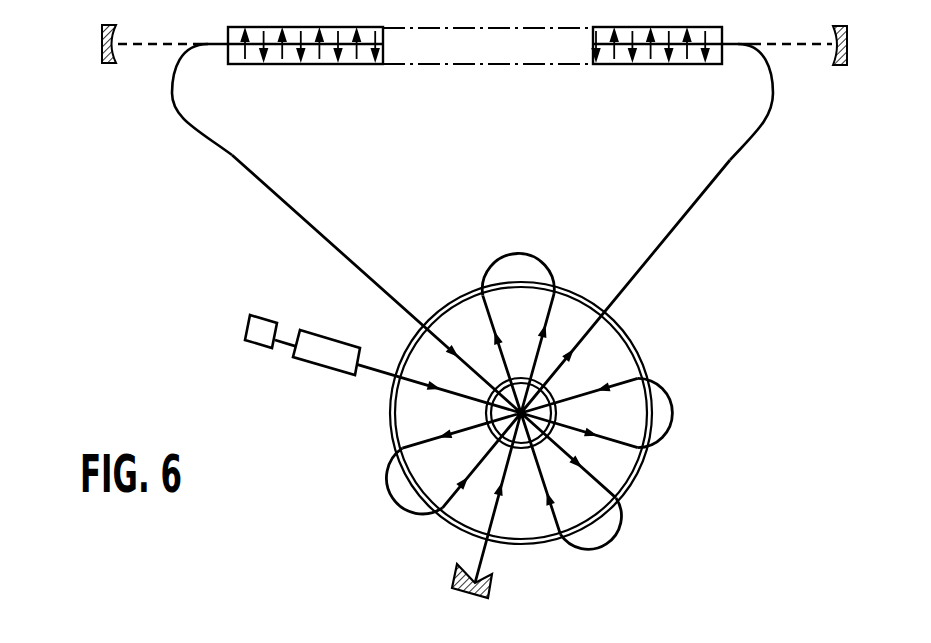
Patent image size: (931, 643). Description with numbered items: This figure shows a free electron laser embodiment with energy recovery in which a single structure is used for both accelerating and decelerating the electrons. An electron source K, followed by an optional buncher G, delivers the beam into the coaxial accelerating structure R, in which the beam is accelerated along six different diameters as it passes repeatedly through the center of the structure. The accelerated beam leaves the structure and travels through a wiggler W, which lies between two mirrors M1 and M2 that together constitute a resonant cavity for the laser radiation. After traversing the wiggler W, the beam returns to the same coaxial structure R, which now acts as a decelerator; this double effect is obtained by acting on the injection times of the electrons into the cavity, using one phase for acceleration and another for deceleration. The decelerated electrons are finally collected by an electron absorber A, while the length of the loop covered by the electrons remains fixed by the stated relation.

The mirror M1 is at (104, 64).
The mirror M2 is at (838, 67).
The wiggler W is at (373, 65).
The electron source K is at (258, 338).
The buncher G is at (320, 355).
The accelerating structure R is at (641, 350).
The electron absorber A is at (452, 579).